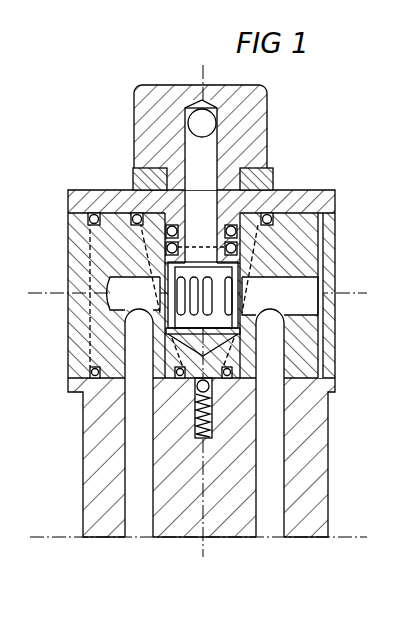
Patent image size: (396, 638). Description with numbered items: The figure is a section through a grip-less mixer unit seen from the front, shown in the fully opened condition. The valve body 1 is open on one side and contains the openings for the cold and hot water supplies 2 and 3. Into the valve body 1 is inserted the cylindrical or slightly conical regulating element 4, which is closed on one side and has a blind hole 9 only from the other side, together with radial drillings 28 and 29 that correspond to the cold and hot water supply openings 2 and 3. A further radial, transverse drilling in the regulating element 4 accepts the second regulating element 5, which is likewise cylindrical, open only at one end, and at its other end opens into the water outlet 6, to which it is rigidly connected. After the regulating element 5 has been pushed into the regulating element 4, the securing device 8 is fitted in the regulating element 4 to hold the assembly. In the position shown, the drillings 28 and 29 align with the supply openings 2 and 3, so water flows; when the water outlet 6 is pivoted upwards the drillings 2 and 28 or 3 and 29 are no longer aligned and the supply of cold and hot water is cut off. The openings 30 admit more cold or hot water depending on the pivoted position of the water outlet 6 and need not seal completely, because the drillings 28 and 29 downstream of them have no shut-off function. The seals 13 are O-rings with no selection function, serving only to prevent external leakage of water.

The valve body 1 is at (310, 417).
The cold water supply opening 2 is at (138, 537).
The hot water supply opening 3 is at (270, 532).
The regulating element 4 is at (82, 255).
The regulating element 5 is at (218, 303).
The water outlet 6 is at (160, 90).
The securing device 8 is at (232, 228).
The blind hole 9 is at (322, 305).
The seals 13 is at (235, 248).
The radial drilling 28 is at (138, 335).
The radial drilling 29 is at (278, 336).
The openings 30 is at (207, 277).